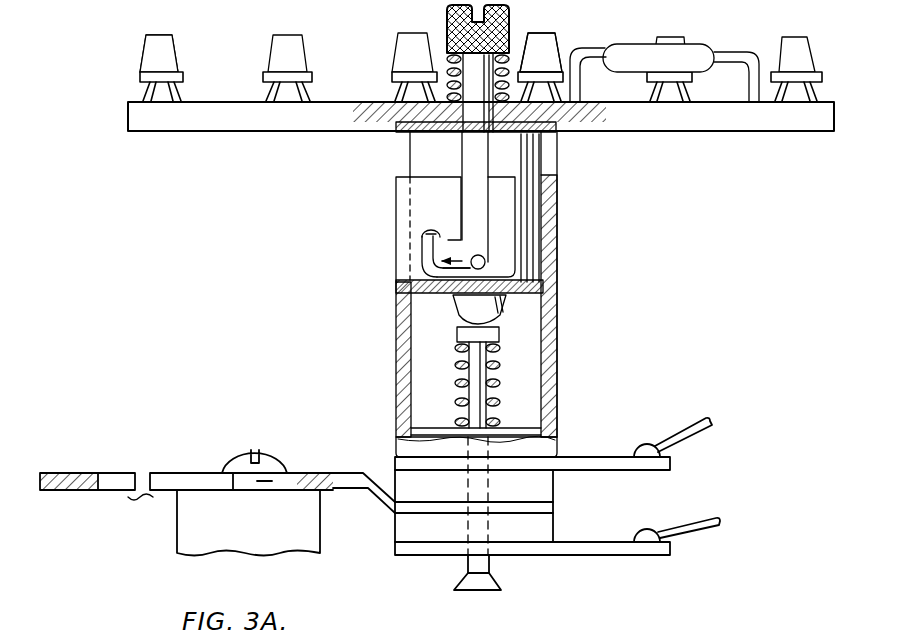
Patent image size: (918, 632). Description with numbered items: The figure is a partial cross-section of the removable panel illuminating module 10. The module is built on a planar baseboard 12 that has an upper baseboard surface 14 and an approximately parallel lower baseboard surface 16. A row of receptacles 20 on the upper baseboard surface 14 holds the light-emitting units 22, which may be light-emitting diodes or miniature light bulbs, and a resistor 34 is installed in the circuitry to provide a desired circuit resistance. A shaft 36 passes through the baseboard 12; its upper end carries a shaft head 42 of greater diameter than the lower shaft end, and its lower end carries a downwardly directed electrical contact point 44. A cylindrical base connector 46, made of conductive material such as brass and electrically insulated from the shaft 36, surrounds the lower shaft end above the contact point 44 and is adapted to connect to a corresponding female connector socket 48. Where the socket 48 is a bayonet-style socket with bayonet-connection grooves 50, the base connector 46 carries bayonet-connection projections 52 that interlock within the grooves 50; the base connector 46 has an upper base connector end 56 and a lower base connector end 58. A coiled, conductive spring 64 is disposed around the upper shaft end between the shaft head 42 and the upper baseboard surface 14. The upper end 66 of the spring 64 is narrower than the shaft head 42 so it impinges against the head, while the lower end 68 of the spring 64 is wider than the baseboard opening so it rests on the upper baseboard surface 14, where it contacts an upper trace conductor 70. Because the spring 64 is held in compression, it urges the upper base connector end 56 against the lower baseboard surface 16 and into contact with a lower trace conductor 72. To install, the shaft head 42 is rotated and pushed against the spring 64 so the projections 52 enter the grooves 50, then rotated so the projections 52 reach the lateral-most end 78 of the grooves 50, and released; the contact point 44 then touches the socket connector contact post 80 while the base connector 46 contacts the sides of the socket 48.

The panel illuminating module 10 is at (270, 24).
The planar baseboard 12 is at (126, 117).
The upper baseboard surface 14 is at (215, 101).
The lower baseboard surface 16 is at (202, 132).
The receptacles 20 is at (140, 74).
The light-emitting units 22 is at (148, 52).
The resistor 34 is at (700, 47).
The shaft 36 is at (483, 104).
The shaft head 42 is at (446, 22).
The downwardly directed electrical contact point 44 is at (465, 314).
The cylindrical base connector 46 is at (520, 192).
The female connector socket 48 is at (396, 397).
The bayonet-connection grooves 50 is at (466, 242).
The bayonet-connection projections 52 is at (485, 262).
The upper base connector end 56 is at (543, 134).
The lower base connector end 58 is at (543, 287).
The spring 64 is at (443, 58).
The upper end of the spring 66 is at (521, 55).
The lower end of the spring 68 is at (524, 133).
The upper trace conductor 70 is at (436, 133).
The lower trace conductor 72 is at (405, 130).
The lateral-most end of the bayonet connection grooves 78 is at (430, 242).
The socket connector contact post 80 is at (484, 418).